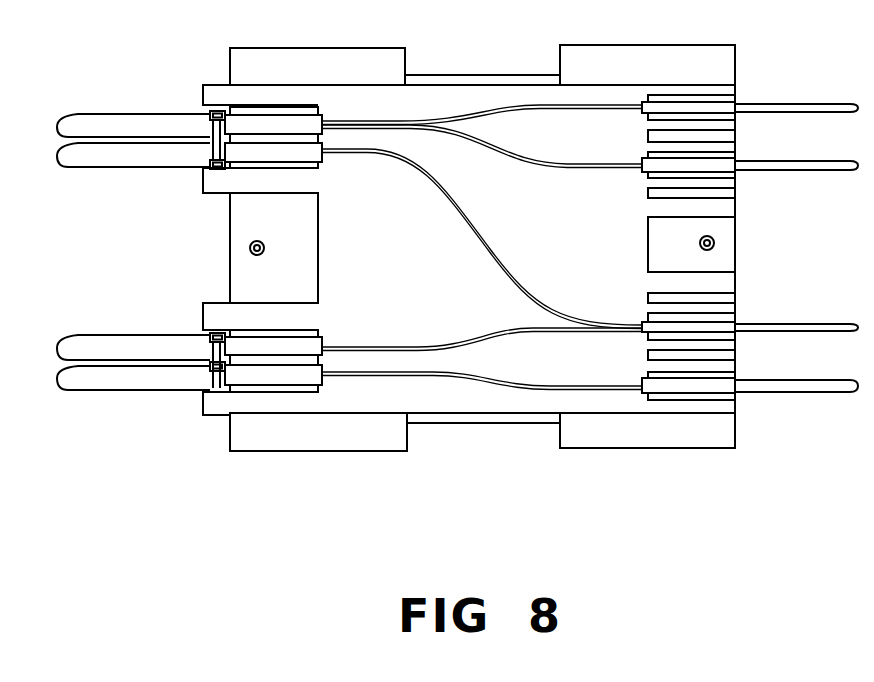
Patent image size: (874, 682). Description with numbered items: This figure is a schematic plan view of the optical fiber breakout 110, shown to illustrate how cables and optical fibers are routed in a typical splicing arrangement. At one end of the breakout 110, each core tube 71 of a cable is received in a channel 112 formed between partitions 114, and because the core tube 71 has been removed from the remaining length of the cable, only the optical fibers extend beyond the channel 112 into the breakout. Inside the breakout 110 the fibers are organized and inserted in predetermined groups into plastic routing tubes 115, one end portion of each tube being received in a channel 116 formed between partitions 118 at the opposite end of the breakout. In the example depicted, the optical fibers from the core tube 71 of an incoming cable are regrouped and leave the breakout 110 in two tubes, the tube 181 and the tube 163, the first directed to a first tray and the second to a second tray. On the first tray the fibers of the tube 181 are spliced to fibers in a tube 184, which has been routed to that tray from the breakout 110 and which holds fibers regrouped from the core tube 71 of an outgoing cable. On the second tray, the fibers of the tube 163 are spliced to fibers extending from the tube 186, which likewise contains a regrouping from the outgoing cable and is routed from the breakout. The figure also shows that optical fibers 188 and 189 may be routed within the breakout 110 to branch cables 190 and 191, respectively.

The optical fiber breakout 110 is at (342, 47).
The channel 112 is at (287, 147).
The partitions 114 is at (253, 107).
The plastic routing tubes 115 is at (120, 117).
The channel 116 is at (655, 124).
The partitions 118 is at (688, 97).
The tube 181 is at (778, 104).
The tube 163 is at (765, 162).
The tube 186 is at (778, 324).
The tube 184 is at (770, 385).
The optical fiber 188 is at (452, 197).
The optical fiber 189 is at (343, 345).
The branch cable 190 is at (118, 163).
The branch cable 191 is at (123, 336).
The core tube 71 is at (180, 383).